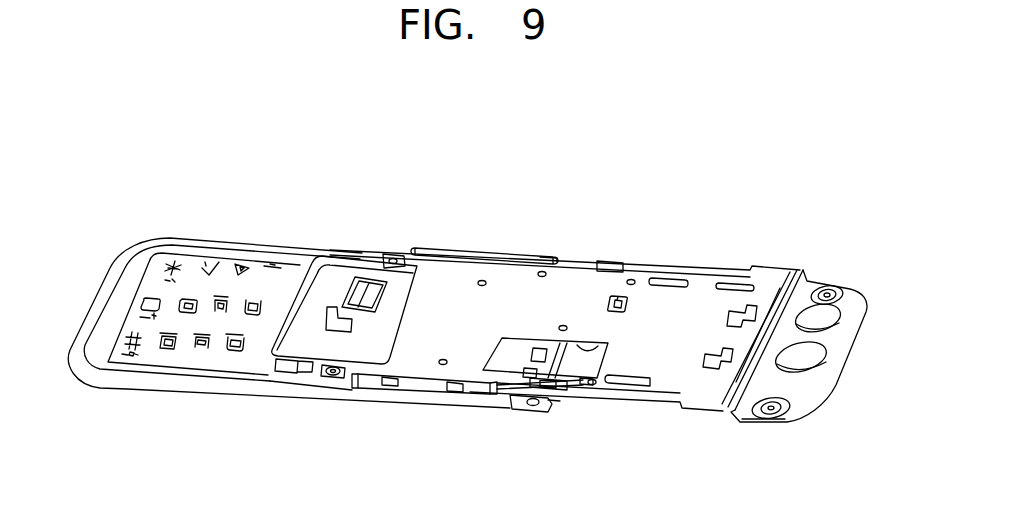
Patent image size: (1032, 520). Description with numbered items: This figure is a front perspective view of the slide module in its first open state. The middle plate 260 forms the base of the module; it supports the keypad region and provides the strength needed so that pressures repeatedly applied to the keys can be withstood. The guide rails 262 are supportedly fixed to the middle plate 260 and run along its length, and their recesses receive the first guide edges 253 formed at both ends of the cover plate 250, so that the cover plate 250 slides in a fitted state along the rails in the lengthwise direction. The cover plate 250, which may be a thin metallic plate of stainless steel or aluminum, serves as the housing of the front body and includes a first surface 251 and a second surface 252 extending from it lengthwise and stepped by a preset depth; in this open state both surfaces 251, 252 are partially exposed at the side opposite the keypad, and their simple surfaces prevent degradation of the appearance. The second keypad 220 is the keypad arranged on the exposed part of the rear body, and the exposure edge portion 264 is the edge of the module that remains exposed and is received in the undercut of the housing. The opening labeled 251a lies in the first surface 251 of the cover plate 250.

The exposure edge portion 264 is at (100, 380).
The second keypad 220 is at (200, 367).
The middle plate 260 is at (287, 390).
The guide rails 262 is at (427, 383).
The first surface 251 is at (630, 370).
The opening of slide body 251a is at (597, 343).
The first guide edges 253 is at (697, 277).
The second surface 252 is at (815, 389).
The cover plate 250 is at (809, 422).